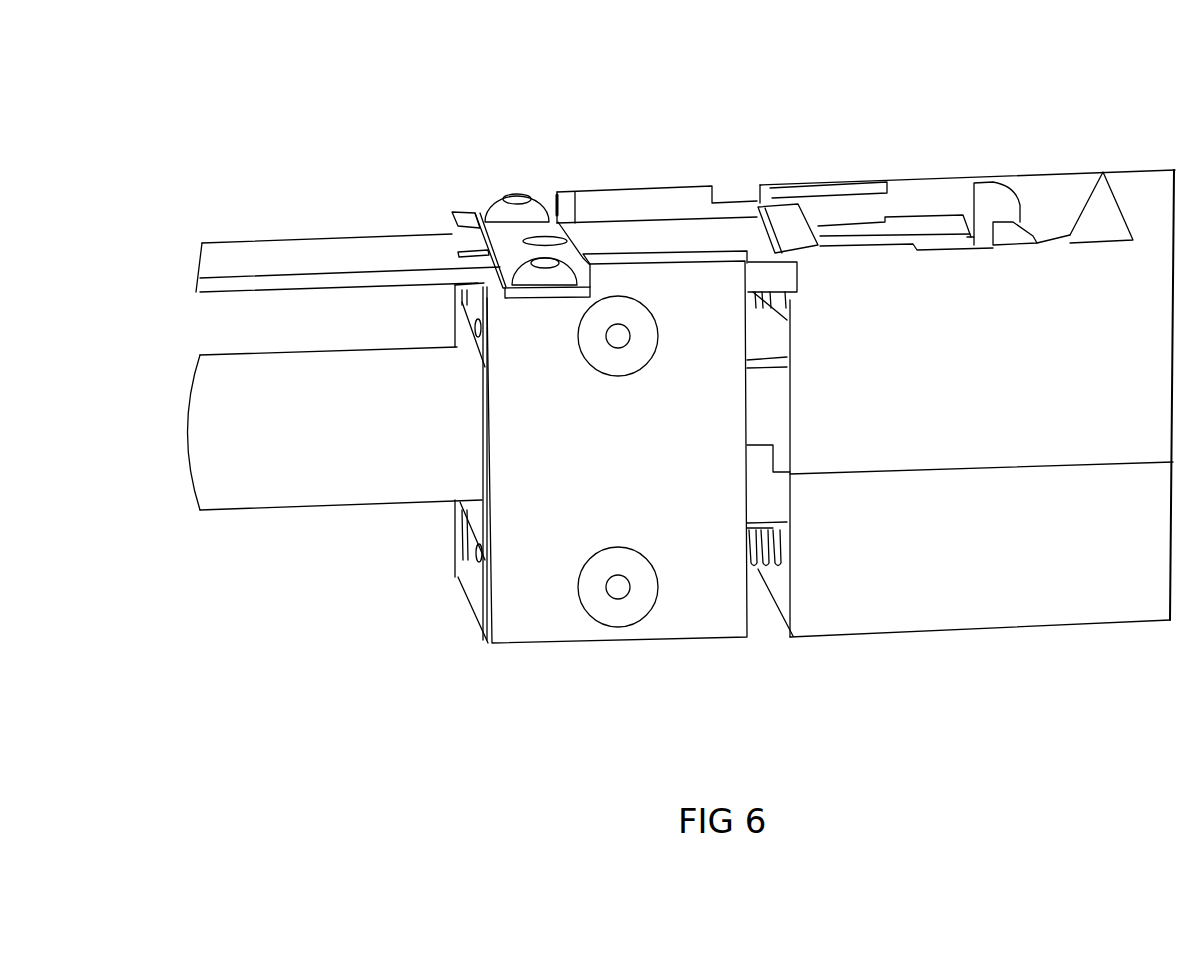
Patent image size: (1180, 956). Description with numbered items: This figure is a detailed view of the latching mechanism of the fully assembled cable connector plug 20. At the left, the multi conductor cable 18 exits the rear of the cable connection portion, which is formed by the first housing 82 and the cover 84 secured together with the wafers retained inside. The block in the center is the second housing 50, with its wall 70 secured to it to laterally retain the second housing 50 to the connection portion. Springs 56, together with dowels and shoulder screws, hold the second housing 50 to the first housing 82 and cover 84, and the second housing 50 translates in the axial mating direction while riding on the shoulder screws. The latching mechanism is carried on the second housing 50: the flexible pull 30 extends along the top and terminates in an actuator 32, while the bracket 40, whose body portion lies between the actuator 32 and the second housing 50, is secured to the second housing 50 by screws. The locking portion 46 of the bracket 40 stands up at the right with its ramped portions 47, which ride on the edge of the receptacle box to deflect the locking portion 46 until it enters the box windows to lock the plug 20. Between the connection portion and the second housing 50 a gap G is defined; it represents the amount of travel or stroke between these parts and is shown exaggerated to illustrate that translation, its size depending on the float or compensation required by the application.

The plug 20 is at (268, 82).
The pull 30 is at (355, 238).
The multi conductor cable 18 is at (232, 505).
The second housing 50 is at (458, 578).
The wall 70 is at (547, 643).
The bracket 40 is at (663, 187).
The actuator 32 is at (770, 192).
The first housing 82 is at (957, 178).
The locking portion 46 is at (992, 180).
The ramped portions 47 is at (1010, 188).
The springs 56 is at (777, 553).
The cover 84 is at (1057, 623).
The gap G is at (768, 630).